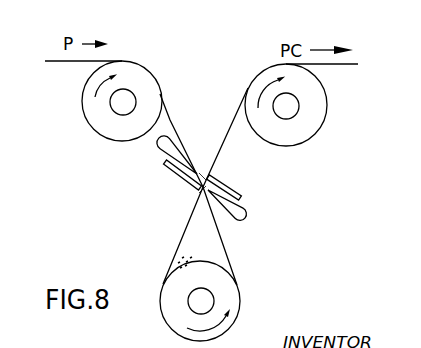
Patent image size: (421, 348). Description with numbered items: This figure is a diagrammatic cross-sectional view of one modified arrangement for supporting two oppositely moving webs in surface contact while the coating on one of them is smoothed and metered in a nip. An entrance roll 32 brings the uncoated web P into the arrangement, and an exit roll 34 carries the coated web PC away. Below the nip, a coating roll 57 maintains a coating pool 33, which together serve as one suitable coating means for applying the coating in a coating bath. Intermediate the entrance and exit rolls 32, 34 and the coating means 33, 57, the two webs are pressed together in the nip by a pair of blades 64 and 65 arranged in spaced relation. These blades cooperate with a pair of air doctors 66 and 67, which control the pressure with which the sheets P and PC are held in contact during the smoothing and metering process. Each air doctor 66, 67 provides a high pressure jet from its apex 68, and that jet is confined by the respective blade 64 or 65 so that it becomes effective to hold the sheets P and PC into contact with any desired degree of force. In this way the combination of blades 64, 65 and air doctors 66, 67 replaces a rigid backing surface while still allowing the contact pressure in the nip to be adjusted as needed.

The entrance roll 32 is at (86, 91).
The exit roll 34 is at (315, 101).
The coating roll 57 is at (230, 306).
The coating pool 33 is at (188, 256).
The blade 64 is at (166, 173).
The blade 65 is at (226, 184).
The air doctor 66 is at (162, 151).
The air doctor 67 is at (246, 214).
The apex 68 is at (199, 173).